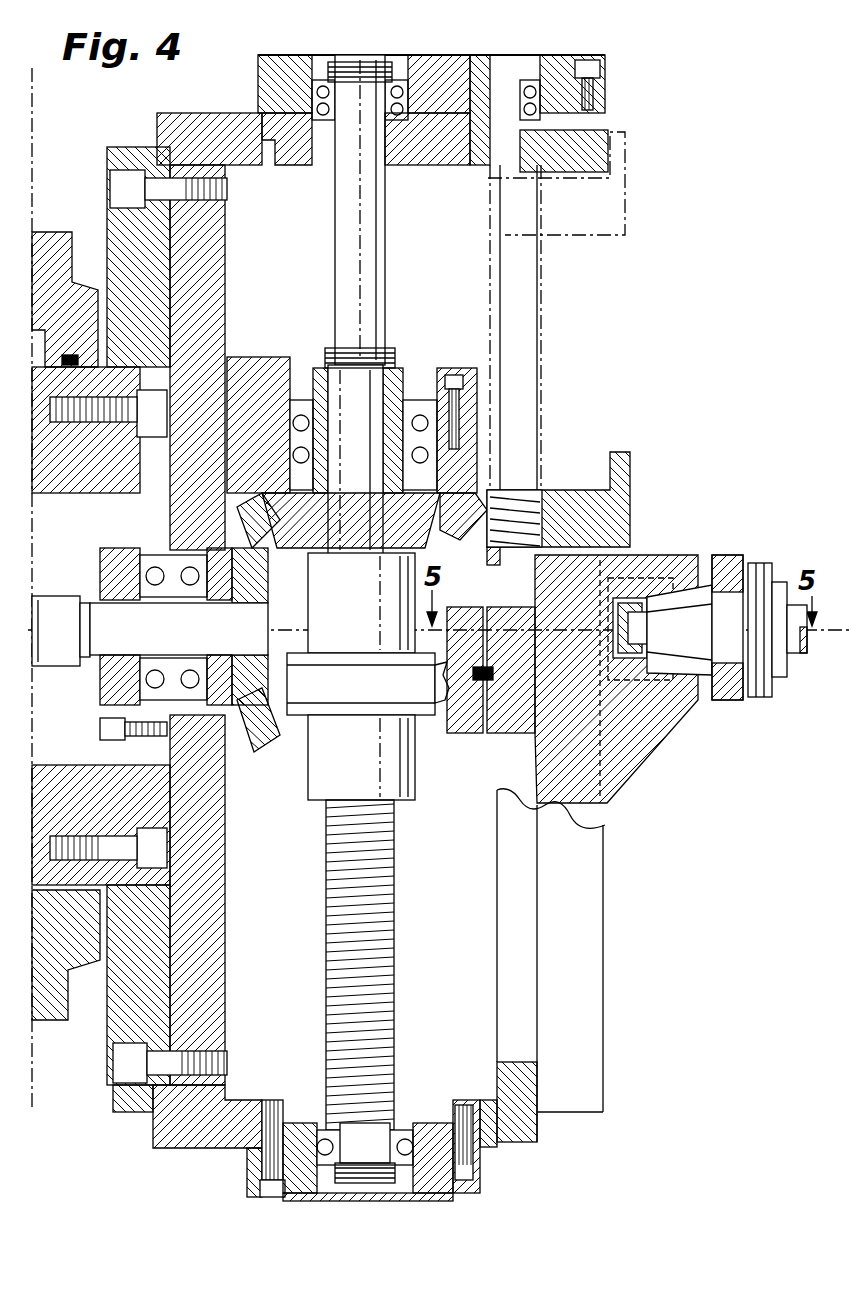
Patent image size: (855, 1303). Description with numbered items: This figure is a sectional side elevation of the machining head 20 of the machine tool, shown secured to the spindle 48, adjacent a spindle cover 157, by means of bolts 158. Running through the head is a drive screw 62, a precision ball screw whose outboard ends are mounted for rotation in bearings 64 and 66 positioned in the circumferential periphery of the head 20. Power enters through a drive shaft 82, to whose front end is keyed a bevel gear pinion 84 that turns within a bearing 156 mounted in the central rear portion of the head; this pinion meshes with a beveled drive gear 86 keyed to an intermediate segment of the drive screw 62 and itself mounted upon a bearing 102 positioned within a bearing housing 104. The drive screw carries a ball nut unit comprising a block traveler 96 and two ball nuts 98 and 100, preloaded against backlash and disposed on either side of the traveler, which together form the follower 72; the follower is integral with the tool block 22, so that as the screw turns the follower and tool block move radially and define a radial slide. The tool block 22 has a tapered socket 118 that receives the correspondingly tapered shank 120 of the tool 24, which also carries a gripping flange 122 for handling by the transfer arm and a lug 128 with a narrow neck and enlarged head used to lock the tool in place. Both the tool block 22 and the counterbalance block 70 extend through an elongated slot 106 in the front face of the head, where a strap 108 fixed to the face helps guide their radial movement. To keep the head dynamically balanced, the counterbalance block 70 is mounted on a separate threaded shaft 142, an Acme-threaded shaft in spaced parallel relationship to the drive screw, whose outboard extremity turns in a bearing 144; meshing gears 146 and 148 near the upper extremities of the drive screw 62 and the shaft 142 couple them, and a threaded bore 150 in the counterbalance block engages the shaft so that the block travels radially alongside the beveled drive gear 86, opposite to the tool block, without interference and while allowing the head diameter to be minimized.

The machining head 20 is at (272, 72).
The tool block 22 is at (630, 800).
The tool 24 is at (786, 712).
The spindle 48 is at (55, 470).
The drive screw 62 is at (355, 950).
The bearing 64 is at (405, 1140).
The bearing 66 is at (380, 78).
The counterbalance block 70 is at (608, 200).
The follower 72 is at (432, 795).
The drive shaft 82 is at (52, 607).
The bevel gear pinion 84 is at (250, 577).
The beveled drive gear 86 is at (458, 518).
The block traveler 96 is at (467, 714).
The ball nut 98 is at (372, 776).
The ball nut 100 is at (362, 606).
The bearing 102 is at (292, 415).
The bearing housing 104 is at (236, 372).
The elongated slot 106 is at (525, 950).
The strap 108 is at (580, 1010).
The tapered socket 118 is at (717, 560).
The tapered shank 120 is at (742, 685).
The gripping flange 122 is at (752, 563).
The lug 128 is at (632, 660).
The threaded shaft 142 is at (525, 322).
The bearing 144 is at (565, 60).
The gear 146 is at (303, 162).
The gear 148 is at (468, 160).
The threaded bore 150 is at (520, 515).
The bearing 156 is at (162, 697).
The spindle cover 157 is at (45, 250).
The bolt 158 is at (155, 848).